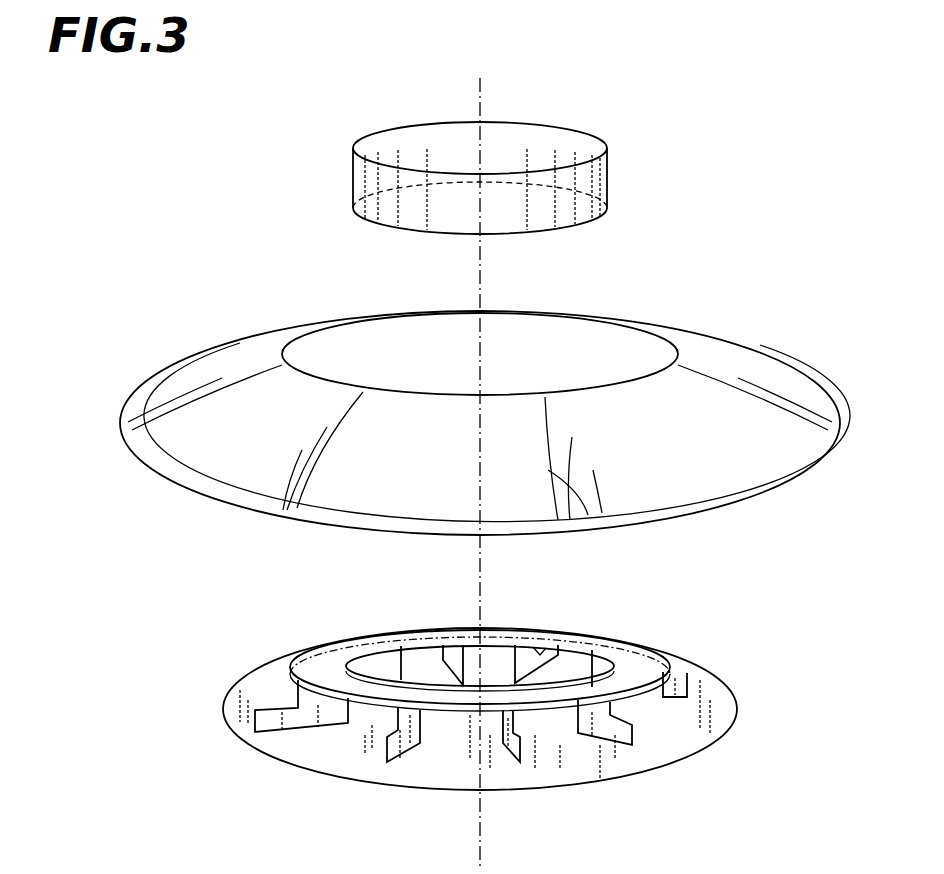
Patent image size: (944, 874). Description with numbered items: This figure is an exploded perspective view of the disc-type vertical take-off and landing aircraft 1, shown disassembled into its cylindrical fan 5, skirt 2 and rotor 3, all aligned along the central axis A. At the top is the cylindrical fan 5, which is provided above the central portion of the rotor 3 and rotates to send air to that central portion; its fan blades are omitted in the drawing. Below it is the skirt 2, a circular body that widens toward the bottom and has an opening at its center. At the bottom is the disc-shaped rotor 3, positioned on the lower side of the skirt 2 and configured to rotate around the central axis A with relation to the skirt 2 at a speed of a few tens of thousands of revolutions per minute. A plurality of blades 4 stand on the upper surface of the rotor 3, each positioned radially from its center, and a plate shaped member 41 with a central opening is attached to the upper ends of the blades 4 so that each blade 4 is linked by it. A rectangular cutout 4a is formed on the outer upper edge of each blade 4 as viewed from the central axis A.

The disc-type vertical take-off and landing aircraft 1 is at (486, 396).
The skirt 2 is at (173, 386).
The rotor 3 is at (706, 690).
The blade 4 is at (606, 738).
The cutout 4a is at (272, 708).
The plate shaped member 41 is at (475, 643).
The cylindrical fan 5 is at (391, 130).
The central axis A is at (478, 460).